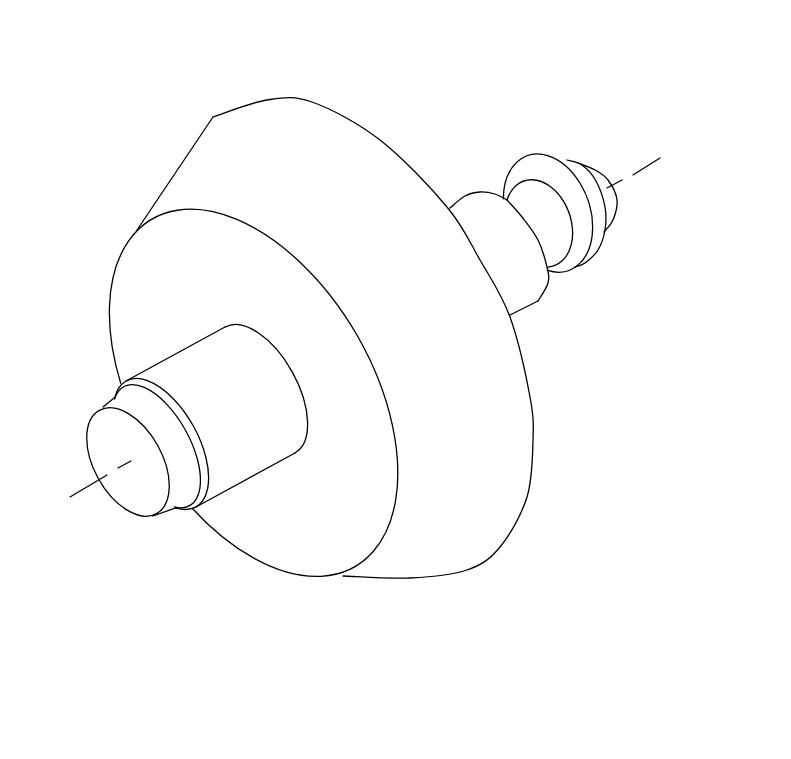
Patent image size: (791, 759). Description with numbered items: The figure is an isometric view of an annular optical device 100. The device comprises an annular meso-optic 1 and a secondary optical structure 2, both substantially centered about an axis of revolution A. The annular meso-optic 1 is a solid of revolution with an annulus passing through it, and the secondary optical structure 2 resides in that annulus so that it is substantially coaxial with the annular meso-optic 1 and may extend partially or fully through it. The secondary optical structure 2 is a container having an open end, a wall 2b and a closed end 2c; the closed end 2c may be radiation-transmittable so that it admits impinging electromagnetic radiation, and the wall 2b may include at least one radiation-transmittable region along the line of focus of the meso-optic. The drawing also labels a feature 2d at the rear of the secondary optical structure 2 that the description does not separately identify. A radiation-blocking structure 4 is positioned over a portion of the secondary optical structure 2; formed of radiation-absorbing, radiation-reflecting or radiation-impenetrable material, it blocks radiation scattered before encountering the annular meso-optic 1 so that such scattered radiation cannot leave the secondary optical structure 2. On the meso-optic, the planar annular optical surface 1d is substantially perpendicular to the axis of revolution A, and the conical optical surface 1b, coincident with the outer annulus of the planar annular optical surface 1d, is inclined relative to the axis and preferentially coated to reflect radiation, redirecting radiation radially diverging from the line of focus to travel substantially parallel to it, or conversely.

The annular optical device 100 is at (460, 607).
The annular meso-optic 1 is at (303, 80).
The conical optical surface 1b is at (205, 160).
The planar annular optical surface 1d is at (265, 548).
The secondary optical structure 2 is at (69, 416).
The wall 2b is at (530, 288).
The closed end 2c is at (127, 499).
The rear flange / collar of shaft 2d is at (566, 160).
The radiation-blocking structure 4 is at (203, 367).
The axis of revolution A is at (364, 325).